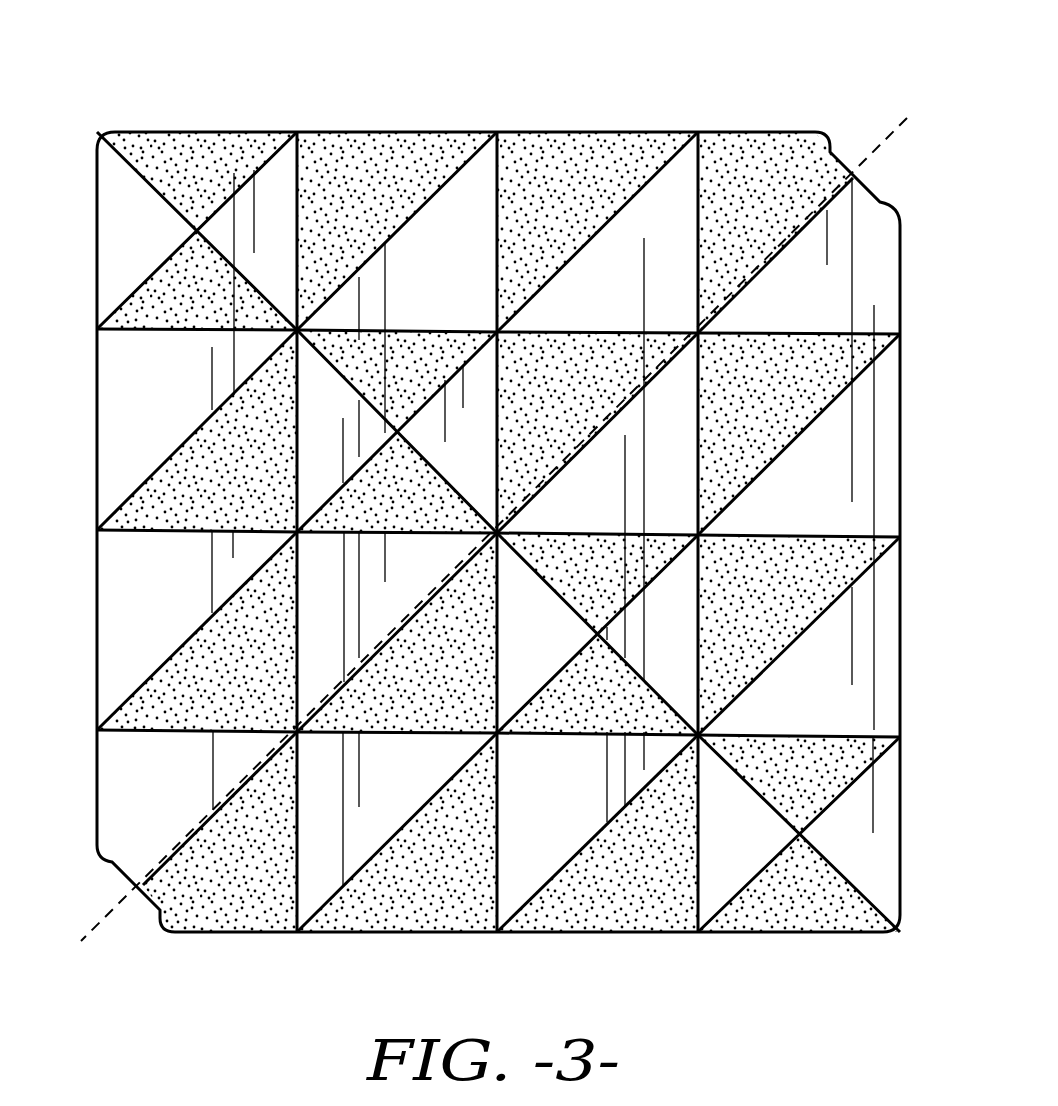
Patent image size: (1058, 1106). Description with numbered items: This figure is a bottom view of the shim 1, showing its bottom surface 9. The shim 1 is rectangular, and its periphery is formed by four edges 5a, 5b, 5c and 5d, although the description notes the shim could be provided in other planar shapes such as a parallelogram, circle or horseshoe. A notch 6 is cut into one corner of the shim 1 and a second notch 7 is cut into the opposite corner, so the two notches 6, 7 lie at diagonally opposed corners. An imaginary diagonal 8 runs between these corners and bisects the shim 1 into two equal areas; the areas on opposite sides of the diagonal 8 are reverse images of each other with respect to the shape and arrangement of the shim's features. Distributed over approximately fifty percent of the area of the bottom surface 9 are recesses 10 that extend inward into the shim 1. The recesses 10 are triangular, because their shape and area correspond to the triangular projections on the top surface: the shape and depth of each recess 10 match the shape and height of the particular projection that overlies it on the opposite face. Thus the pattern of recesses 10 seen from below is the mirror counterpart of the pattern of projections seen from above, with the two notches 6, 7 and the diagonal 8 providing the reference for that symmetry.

The shim 1 is at (253, 83).
The edge 5a is at (608, 935).
The edge 5b is at (902, 625).
The edge 5c is at (422, 132).
The edge 5d is at (95, 412).
The notch 6 is at (839, 156).
The notch 7 is at (152, 905).
The imaginary diagonal 8 is at (887, 151).
The bottom surface 9 is at (117, 222).
The recesses 10 is at (665, 205).